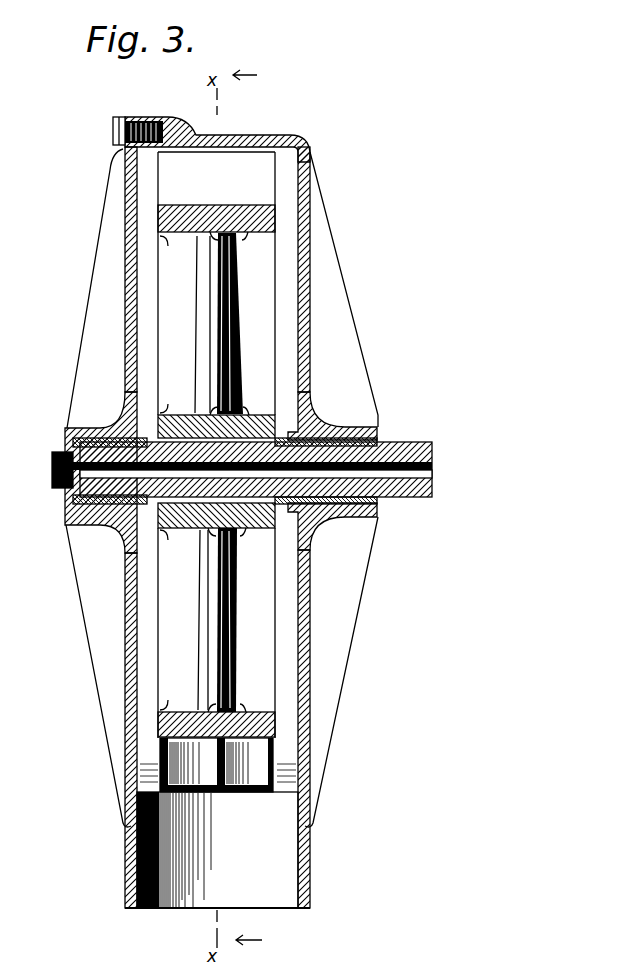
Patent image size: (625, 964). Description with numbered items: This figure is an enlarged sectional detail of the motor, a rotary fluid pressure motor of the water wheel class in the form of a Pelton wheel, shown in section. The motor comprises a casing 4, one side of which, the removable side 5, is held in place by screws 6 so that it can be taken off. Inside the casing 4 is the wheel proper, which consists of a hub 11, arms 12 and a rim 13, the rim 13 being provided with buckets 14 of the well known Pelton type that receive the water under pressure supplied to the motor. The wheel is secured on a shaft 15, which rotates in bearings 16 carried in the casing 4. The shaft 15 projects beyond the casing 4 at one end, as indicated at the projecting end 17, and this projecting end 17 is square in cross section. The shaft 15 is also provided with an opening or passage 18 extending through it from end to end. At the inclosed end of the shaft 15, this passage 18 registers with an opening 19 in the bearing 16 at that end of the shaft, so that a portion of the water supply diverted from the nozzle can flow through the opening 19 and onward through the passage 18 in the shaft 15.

The casing 4 is at (268, 137).
The removable side 5 is at (97, 640).
The screws 6 is at (113, 130).
The hub 11 is at (174, 411).
The arms 12 is at (232, 646).
The rim 13 is at (178, 714).
The buckets 14 is at (252, 811).
The shaft 15 is at (377, 438).
The bearings 16 is at (85, 430).
The projecting end of shaft 17 is at (417, 450).
The passage 18 is at (406, 472).
The opening in bearing 19 is at (50, 477).